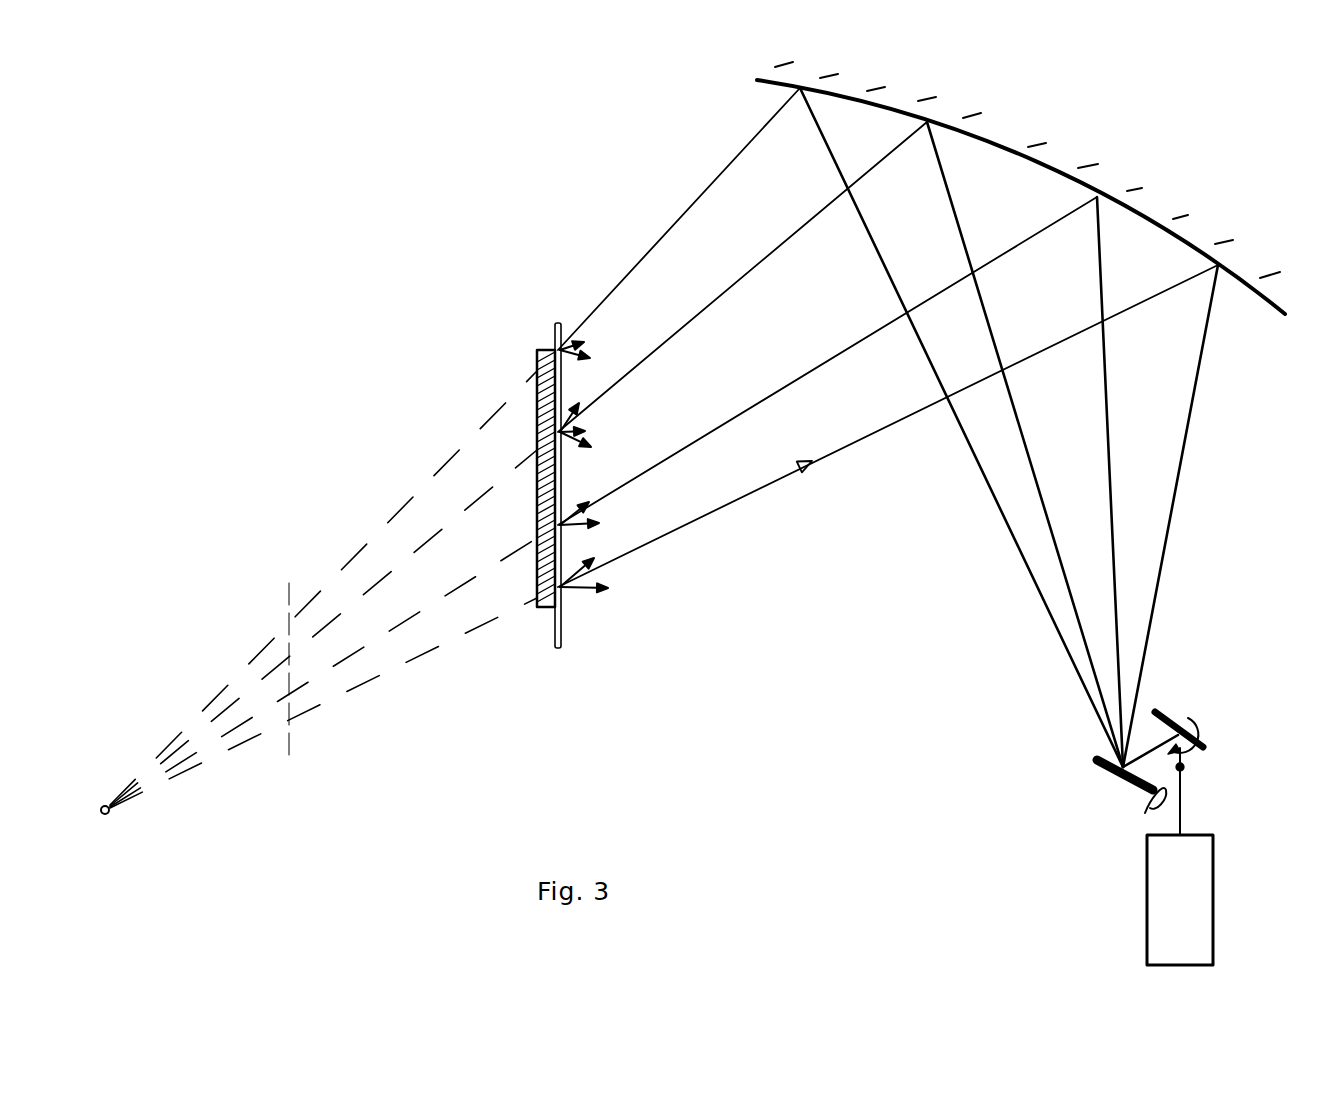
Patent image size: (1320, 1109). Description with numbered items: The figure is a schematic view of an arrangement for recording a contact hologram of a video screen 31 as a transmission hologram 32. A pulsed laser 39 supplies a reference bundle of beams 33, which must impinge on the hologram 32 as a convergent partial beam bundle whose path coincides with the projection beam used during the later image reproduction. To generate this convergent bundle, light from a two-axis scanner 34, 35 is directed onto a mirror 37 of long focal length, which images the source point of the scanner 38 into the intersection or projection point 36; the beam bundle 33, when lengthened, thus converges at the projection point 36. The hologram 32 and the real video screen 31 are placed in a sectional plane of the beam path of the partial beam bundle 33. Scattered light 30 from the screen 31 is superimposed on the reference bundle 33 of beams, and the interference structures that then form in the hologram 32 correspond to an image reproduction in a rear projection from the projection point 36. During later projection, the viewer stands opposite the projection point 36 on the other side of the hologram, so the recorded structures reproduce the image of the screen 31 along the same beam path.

The scattered light 30 is at (596, 594).
The video screen 31 is at (537, 616).
The transmission hologram 32 is at (553, 313).
The reference bundle of beams 33 is at (800, 482).
The two-axis scanner 34 is at (1088, 767).
The two-axis scanner 35 is at (1170, 705).
The intersection or projection point 36 is at (72, 812).
The mirror 37 is at (1068, 162).
The source point of the scanner 38 is at (1190, 773).
The pulsed laser 39 is at (1216, 912).